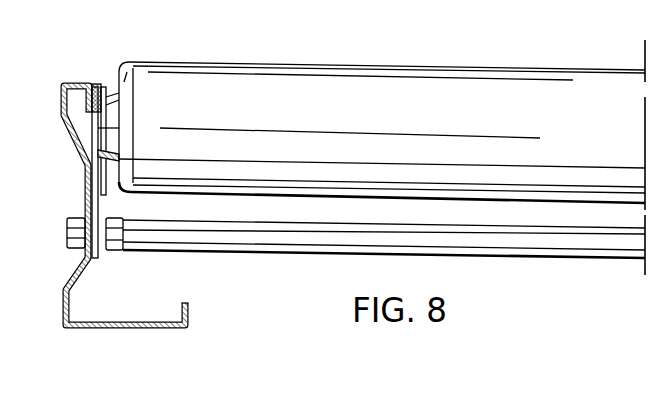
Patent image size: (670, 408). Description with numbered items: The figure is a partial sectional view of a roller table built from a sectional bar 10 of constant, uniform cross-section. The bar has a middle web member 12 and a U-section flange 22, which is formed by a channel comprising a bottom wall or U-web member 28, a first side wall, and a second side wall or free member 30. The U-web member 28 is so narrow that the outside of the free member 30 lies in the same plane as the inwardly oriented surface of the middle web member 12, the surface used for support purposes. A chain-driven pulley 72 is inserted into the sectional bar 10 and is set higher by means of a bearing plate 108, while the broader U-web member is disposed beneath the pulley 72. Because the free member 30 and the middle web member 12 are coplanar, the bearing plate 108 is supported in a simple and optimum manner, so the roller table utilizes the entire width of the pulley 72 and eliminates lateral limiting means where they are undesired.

The sectional bar 10 is at (72, 330).
The middle web member 12 is at (86, 205).
The U-section flange 22 is at (63, 84).
The U-web member 28 is at (77, 82).
The second side wall 30 is at (96, 83).
The chain-driven pulley 72 is at (329, 90).
The bearing plate 108 is at (85, 164).